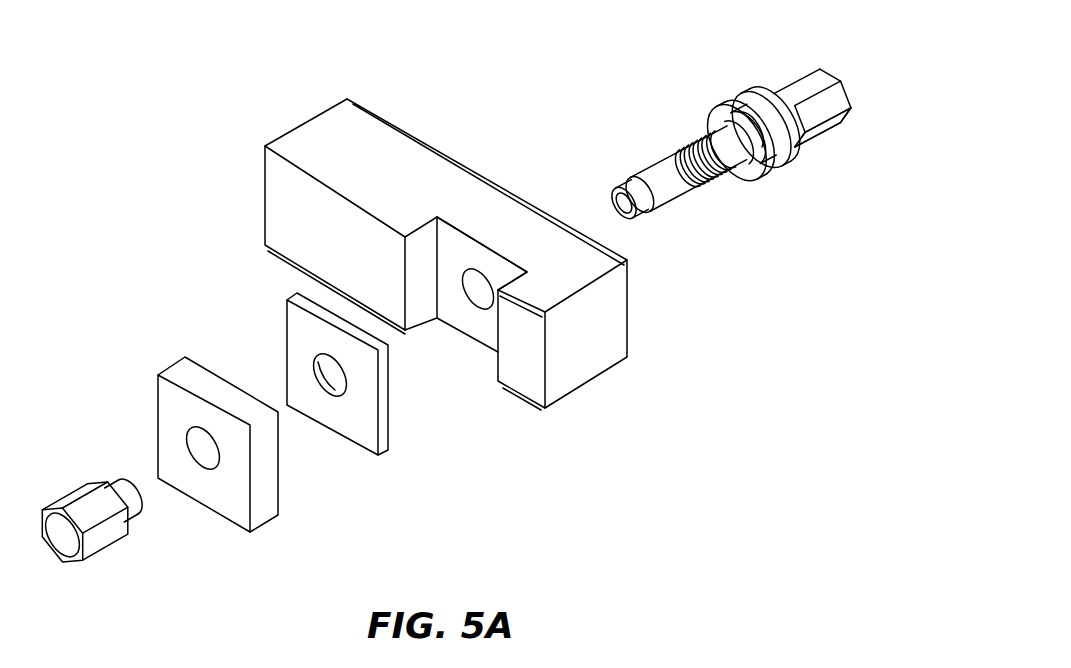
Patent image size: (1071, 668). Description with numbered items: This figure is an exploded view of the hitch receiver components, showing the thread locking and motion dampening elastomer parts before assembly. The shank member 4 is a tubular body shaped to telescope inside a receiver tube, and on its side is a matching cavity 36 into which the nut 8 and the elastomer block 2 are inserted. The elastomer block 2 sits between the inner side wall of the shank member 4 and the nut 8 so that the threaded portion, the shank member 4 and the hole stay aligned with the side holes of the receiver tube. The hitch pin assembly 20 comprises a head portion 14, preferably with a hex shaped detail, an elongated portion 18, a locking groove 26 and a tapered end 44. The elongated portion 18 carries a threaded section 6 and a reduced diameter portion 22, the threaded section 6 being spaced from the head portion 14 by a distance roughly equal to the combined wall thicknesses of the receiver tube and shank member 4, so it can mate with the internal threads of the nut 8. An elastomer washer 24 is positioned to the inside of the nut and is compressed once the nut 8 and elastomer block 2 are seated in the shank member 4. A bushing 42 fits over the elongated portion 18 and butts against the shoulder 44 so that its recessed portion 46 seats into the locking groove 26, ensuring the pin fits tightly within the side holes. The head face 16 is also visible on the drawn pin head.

The elastomer block 2 is at (385, 457).
The shank member 4 is at (298, 248).
The threaded section 6 is at (715, 180).
The nut 8 is at (273, 522).
The head portion 14 is at (835, 80).
The head face 16 is at (818, 127).
The elongated portion 18 is at (715, 123).
The hitch pin assembly 20 is at (718, 68).
The reduced diameter portion 22 is at (658, 175).
The elastomer washer 24 is at (737, 97).
The locking groove 26 is at (647, 210).
The cavity 36 is at (445, 227).
The bushing 42 is at (478, 297).
The tapered end 44 is at (617, 190).
The recessed portion 46 is at (137, 517).